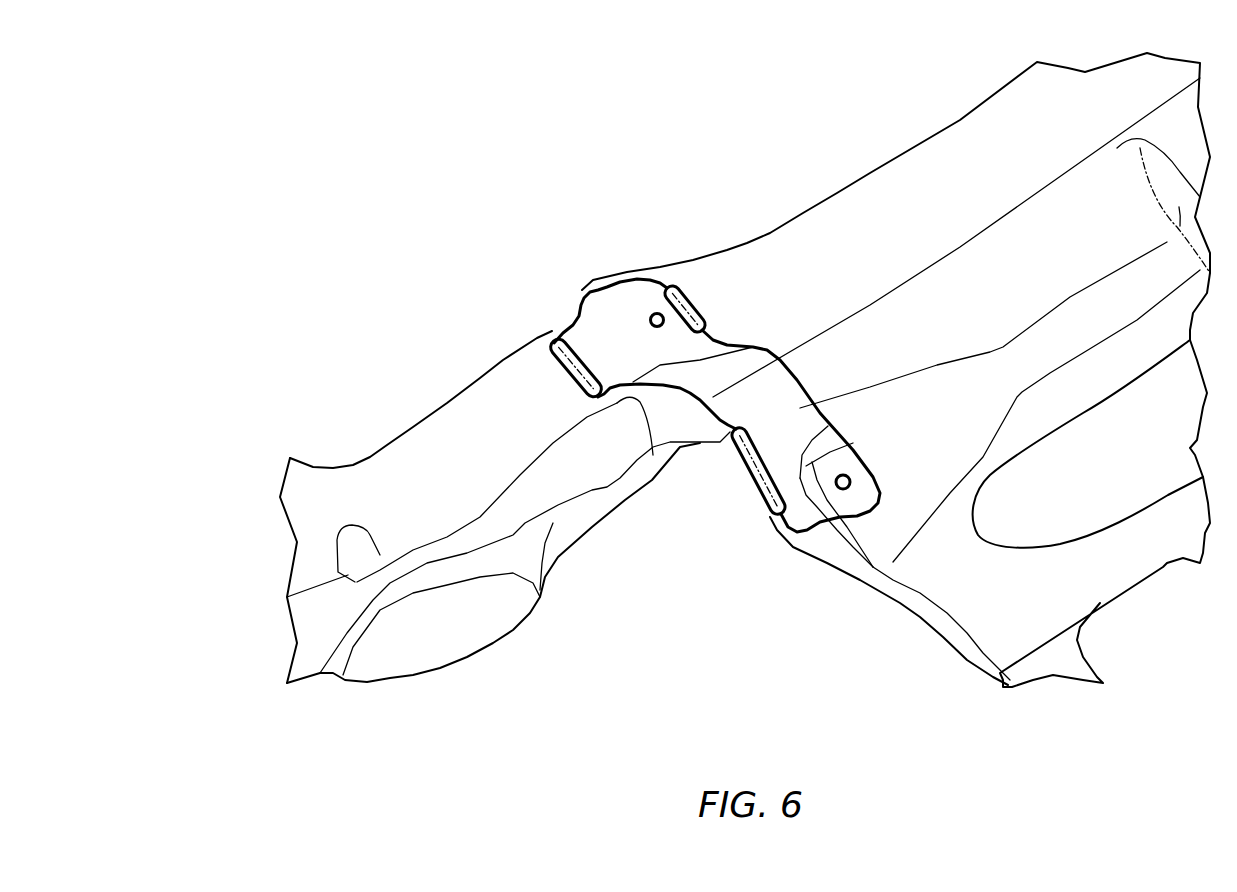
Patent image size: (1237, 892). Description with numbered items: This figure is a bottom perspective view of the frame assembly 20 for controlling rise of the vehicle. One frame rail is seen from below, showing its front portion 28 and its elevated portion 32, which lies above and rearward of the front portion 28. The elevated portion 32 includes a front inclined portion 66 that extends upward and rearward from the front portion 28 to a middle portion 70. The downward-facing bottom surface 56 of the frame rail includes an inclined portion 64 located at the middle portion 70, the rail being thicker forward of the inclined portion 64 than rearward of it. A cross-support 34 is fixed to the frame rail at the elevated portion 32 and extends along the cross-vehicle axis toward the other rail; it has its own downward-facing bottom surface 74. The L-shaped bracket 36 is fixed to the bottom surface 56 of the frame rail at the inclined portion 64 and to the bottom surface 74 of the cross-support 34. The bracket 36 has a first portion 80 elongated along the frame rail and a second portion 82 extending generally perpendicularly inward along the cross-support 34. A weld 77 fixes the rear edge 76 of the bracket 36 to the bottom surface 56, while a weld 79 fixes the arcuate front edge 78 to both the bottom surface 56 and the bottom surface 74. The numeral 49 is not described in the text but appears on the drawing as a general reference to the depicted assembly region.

The assembly 20 is at (670, 379).
The front portion 28 is at (313, 503).
The elevated portion 32 is at (980, 147).
The cross-support 34 is at (945, 570).
The bracket 36 is at (777, 437).
The assembly 49 is at (553, 180).
The bottom surface 56 is at (923, 180).
The inclined portion 64 is at (653, 408).
The front inclined portion 66 is at (472, 430).
The middle portion 70 is at (872, 213).
The bottom surface 74 is at (919, 346).
The rear edge 76 is at (695, 297).
The weld 77 is at (707, 318).
The front edge 78 is at (557, 370).
The weld 79 is at (577, 387).
The first portion 80 is at (613, 330).
The second portion 82 is at (836, 417).